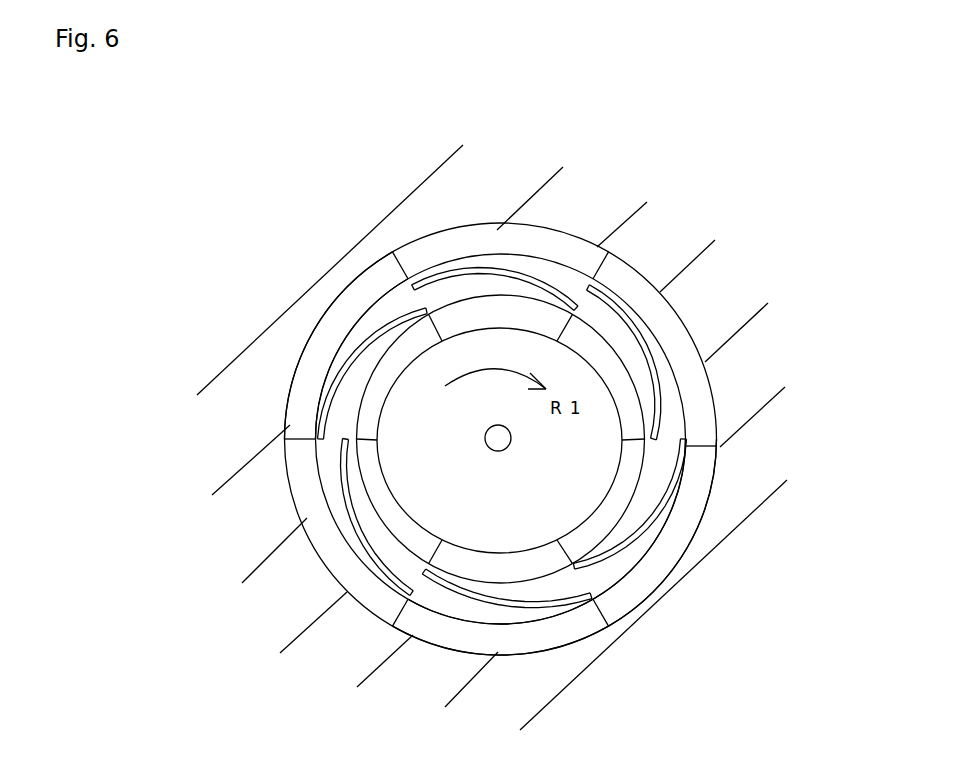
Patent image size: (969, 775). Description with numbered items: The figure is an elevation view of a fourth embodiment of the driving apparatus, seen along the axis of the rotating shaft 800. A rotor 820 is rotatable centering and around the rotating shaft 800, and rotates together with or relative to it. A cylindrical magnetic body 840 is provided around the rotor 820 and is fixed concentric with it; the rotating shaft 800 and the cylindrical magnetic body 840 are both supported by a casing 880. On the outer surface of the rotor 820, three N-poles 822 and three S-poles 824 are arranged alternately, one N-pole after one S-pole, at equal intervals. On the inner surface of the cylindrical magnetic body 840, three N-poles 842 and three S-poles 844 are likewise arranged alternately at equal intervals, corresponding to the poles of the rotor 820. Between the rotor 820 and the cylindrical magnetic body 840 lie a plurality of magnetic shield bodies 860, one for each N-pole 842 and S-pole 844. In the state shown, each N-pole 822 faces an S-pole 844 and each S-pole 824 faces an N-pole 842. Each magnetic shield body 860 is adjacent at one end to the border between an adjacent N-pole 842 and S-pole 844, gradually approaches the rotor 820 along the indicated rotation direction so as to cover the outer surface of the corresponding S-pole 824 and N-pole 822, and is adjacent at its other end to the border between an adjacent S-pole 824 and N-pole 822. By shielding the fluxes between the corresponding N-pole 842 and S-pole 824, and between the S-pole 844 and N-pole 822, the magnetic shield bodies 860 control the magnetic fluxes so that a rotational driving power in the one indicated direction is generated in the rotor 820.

The rotating shaft 800 is at (510, 450).
The rotor 820 is at (628, 412).
The N-pole 822 is at (524, 305).
The S-pole 824 is at (417, 338).
The cylindrical magnetic body 840 is at (717, 477).
The N-pole 842 is at (537, 637).
The S-pole 844 is at (650, 583).
The magnetic shield body 860 is at (315, 373).
The casing 880 is at (248, 447).